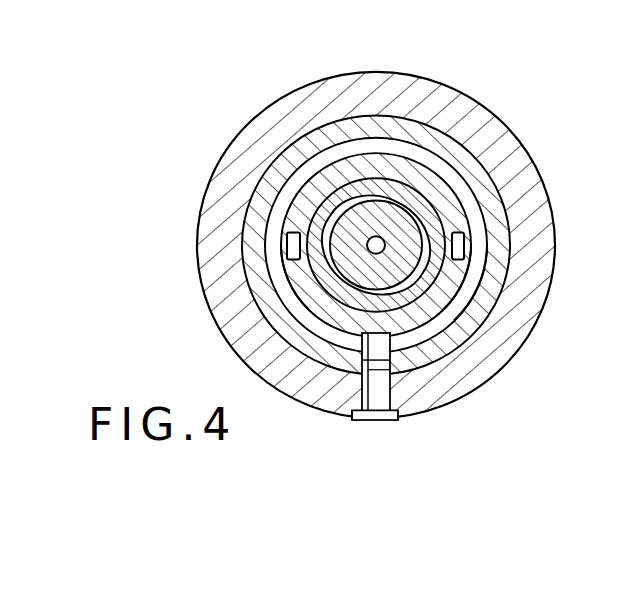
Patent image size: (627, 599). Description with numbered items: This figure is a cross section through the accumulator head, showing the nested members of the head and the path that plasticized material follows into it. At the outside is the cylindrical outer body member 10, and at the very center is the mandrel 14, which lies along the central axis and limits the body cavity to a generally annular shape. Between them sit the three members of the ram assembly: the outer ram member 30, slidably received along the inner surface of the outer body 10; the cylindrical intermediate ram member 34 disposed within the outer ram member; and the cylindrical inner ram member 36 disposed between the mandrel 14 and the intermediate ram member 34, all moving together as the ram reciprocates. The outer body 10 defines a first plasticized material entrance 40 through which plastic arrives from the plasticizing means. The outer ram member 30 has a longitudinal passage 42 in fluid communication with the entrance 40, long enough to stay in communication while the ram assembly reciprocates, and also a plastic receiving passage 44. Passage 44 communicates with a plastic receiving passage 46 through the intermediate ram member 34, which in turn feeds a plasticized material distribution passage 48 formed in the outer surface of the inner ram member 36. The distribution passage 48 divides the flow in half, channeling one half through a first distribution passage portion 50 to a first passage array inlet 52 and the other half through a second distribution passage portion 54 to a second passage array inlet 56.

The outer body member 10 is at (408, 245).
The mandrel 14 is at (376, 161).
The outer ram member 30 is at (431, 244).
The intermediate ram member 34 is at (446, 244).
The inner ram member 36 is at (388, 172).
The first plasticized material entrance 40 is at (407, 390).
The longitudinal passage 42 is at (443, 391).
The plastic receiving passage 44 is at (512, 325).
The plastic receiving passage 46 is at (317, 417).
The plasticized material distribution passage 48 is at (310, 248).
The first distribution passage portion 50 is at (229, 269).
The first passage array inlet 52 is at (225, 214).
The second distribution passage portion 54 is at (508, 311).
The second passage array inlet 56 is at (536, 215).